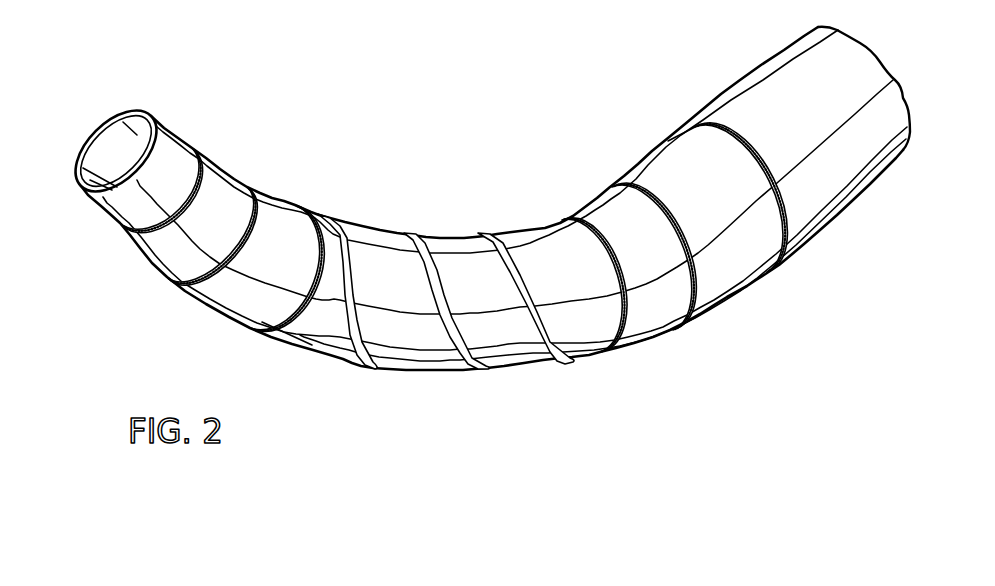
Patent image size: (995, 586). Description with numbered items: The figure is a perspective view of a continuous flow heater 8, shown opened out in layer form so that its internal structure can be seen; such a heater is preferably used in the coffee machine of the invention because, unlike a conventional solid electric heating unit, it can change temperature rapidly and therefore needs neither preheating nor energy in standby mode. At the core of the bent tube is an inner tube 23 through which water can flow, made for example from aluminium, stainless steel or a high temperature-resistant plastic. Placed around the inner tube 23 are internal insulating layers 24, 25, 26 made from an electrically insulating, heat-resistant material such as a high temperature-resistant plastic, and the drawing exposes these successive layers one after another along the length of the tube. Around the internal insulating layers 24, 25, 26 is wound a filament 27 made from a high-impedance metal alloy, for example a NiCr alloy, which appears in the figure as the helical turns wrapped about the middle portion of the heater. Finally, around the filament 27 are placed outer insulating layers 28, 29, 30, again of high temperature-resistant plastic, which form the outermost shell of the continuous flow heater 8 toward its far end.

The continuous flow heater 8 is at (707, 103).
The inner tube 23 is at (117, 203).
The internal insulating layer 24 is at (158, 250).
The internal insulating layer 25 is at (230, 302).
The internal insulating layer 26 is at (317, 333).
The filament 27 is at (410, 231).
The outer insulating layer 28 is at (636, 316).
The outer insulating layer 29 is at (713, 278).
The outer insulating layer 30 is at (817, 195).